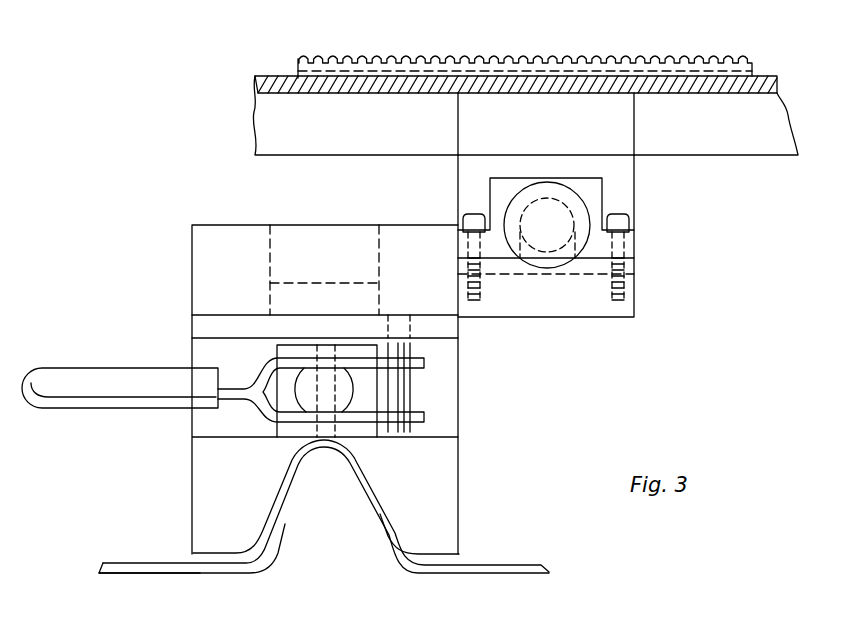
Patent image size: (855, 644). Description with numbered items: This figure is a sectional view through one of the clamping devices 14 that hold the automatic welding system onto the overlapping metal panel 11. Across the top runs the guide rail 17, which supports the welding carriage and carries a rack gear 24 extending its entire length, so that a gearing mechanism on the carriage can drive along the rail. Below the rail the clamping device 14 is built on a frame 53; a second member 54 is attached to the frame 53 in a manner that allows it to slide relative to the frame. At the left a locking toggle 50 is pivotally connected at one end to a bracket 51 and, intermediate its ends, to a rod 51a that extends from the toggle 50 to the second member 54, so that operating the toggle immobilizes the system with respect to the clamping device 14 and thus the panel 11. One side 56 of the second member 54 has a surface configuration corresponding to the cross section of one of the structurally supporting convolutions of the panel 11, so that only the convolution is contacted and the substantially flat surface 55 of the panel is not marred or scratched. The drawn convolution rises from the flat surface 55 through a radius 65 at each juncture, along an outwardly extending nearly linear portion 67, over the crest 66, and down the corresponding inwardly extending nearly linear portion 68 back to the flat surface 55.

The panel 11 is at (130, 562).
The clamping device 14 is at (480, 388).
The guide rail 17 is at (765, 112).
The rack gear 24 is at (705, 62).
The locking toggle 50 is at (126, 366).
The bracket 51 is at (200, 328).
The rod 51a is at (290, 394).
The frame 53 is at (200, 254).
The second member 54 is at (443, 526).
The flat surface 55 is at (158, 574).
The side of member 56 is at (272, 516).
The radius 65 is at (258, 567).
The crest 66 is at (347, 450).
The outwardly extending nearly linear portion 67 is at (288, 492).
The inwardly extending nearly linear portion 68 is at (367, 497).